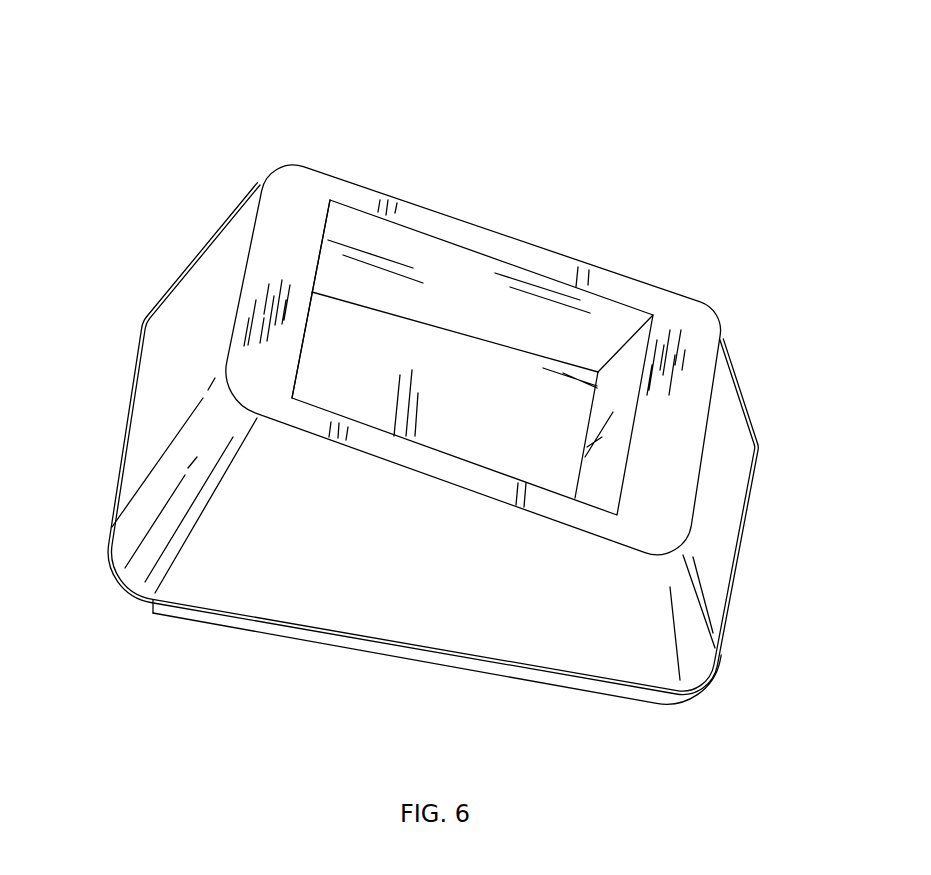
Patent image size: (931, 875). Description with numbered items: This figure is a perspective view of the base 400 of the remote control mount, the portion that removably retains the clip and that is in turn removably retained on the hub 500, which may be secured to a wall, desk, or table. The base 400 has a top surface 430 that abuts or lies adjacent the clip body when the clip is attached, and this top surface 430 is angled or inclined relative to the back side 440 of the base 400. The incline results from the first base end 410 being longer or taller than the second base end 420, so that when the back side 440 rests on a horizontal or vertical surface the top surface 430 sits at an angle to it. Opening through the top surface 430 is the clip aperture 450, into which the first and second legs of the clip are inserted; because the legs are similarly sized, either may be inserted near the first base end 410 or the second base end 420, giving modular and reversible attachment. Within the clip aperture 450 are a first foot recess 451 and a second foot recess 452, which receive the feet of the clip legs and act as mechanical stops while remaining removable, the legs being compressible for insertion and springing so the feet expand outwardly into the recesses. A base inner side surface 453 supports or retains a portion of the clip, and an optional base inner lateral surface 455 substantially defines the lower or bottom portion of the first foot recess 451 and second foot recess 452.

The base 400 is at (103, 106).
The first base end 410 is at (202, 287).
The second base end 420 is at (720, 502).
The top surface 430 is at (288, 227).
The back side 440 is at (121, 465).
The clip aperture 450 is at (435, 376).
The first foot recess 451 is at (302, 391).
The second foot recess 452 is at (575, 461).
The base inner side surface 453 is at (601, 394).
The base inner lateral surface 455 is at (452, 427).
The hub 500 is at (133, 598).